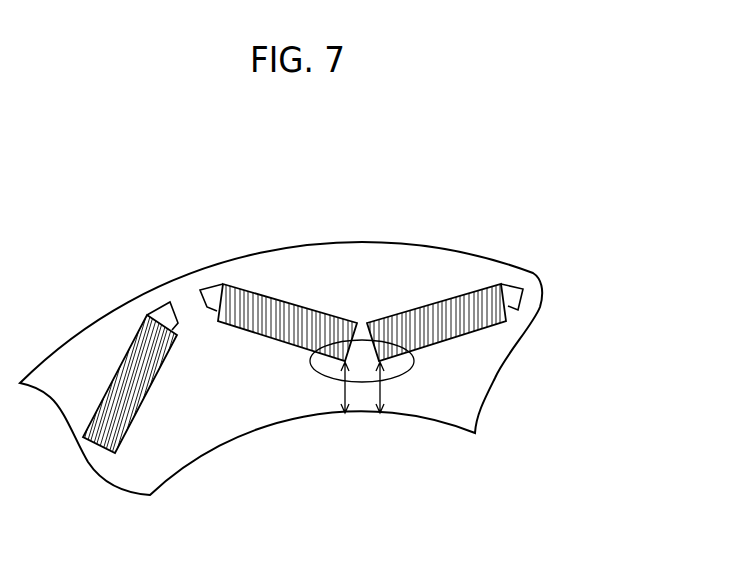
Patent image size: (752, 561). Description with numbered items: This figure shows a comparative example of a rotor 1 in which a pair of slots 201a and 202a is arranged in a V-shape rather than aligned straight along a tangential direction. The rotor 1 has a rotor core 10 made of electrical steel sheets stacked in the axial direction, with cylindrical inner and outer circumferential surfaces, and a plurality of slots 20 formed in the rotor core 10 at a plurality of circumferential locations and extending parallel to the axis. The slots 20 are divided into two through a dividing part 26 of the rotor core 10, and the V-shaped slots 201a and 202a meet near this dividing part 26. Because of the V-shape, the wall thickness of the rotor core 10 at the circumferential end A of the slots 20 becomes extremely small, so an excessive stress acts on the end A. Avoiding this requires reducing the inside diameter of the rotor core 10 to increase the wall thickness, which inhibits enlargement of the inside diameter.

The rotor 1 is at (462, 210).
The rotor core 10 is at (495, 257).
The slots 20 is at (430, 137).
The slot 201a is at (293, 323).
The slot 202a is at (430, 323).
The dividing part 26 is at (362, 357).
The end of the slots A is at (410, 368).